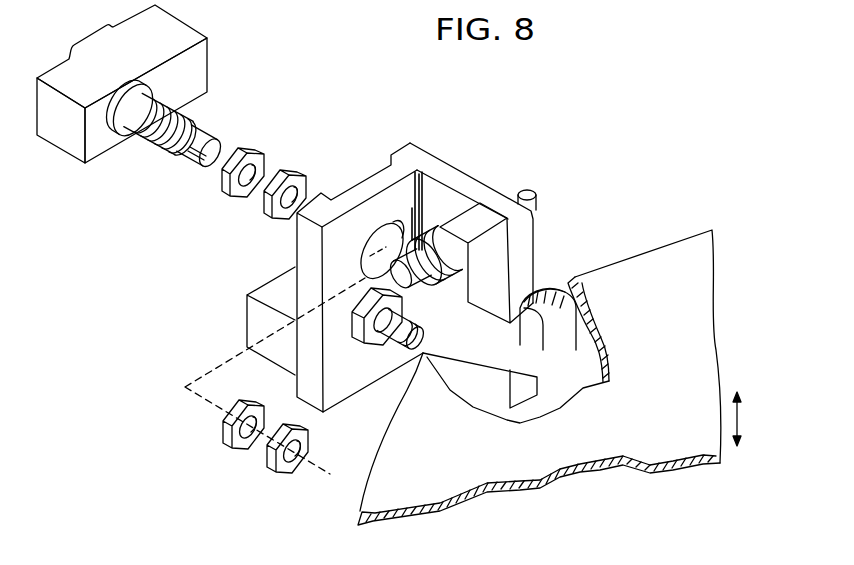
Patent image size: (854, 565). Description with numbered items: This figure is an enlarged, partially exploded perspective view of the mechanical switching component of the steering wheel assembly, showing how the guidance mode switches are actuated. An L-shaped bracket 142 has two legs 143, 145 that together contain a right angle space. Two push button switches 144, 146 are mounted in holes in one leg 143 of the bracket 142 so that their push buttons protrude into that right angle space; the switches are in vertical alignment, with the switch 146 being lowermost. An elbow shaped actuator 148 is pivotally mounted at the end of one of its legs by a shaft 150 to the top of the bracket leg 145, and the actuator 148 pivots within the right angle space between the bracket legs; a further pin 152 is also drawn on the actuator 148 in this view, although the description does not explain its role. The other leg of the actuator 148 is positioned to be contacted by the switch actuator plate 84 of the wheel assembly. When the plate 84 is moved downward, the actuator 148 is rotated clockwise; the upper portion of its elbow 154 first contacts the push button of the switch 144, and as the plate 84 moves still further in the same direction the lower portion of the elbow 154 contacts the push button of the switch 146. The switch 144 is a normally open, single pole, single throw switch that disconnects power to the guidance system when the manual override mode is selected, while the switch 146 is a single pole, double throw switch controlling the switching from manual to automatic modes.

The switch actuator plate 84 is at (658, 327).
The L-shaped bracket 142 is at (386, 256).
The bracket leg 143 is at (353, 195).
The push button switch 144 is at (209, 63).
The bracket leg 145 is at (438, 170).
The push button switch 146 is at (262, 322).
The elbow shaped actuator 148 is at (491, 250).
The shaft 150 is at (413, 258).
The pin 152 is at (560, 313).
The elbow 154 is at (440, 337).